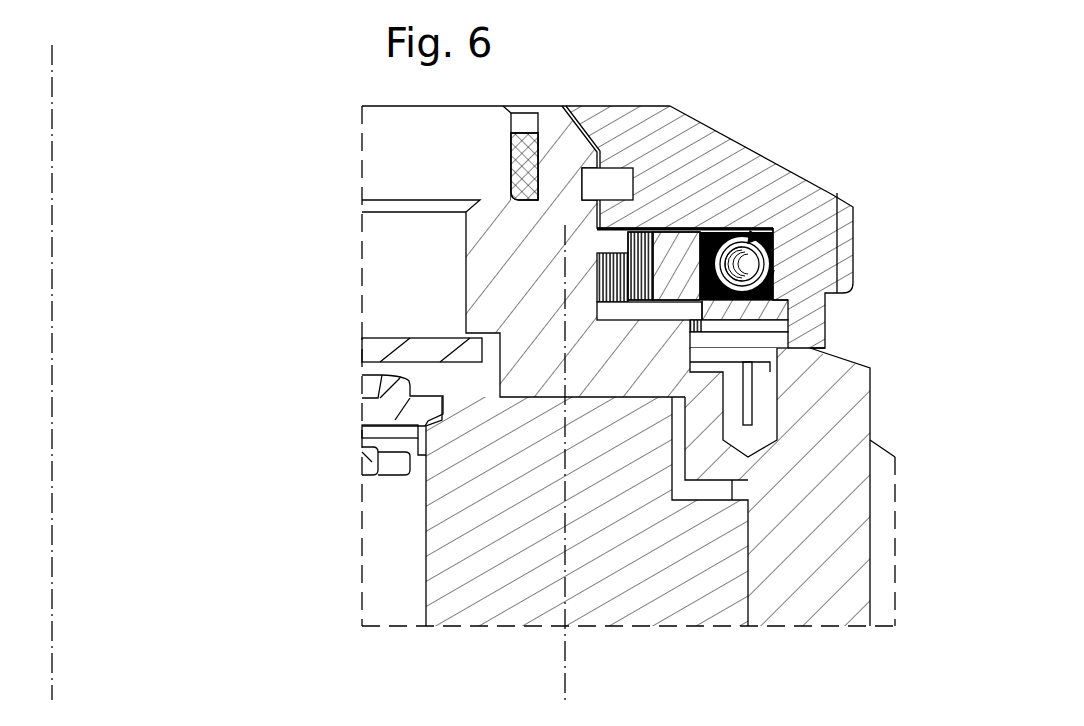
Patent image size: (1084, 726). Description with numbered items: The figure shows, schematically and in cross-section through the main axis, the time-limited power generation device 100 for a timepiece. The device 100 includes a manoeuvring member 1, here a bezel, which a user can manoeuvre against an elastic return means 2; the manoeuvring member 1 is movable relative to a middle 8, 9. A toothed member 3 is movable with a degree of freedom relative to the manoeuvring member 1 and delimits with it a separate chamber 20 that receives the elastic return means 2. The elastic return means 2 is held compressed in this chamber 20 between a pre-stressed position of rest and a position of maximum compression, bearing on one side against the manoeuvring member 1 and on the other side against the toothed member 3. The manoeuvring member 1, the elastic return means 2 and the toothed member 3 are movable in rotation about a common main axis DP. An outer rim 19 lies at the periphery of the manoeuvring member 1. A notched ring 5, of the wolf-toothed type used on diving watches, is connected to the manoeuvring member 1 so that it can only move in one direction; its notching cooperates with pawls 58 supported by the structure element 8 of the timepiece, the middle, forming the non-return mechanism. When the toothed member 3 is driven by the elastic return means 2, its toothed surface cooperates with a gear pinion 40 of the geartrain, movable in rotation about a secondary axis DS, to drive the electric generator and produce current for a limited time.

The time-limited power generation device 100 is at (852, 141).
The manoeuvring member 1 is at (743, 160).
The elastic return means 2 is at (747, 237).
The toothed member 3 is at (673, 257).
The notched ring 5 is at (780, 312).
The structure element 8 is at (823, 527).
The middle 9 is at (573, 142).
The outer rim 19 is at (847, 228).
The chamber 20 is at (773, 262).
The gear pinion 40 is at (503, 279).
The pawl 58 is at (750, 417).
The main axis DP is at (52, 659).
The secondary axis DS is at (565, 665).